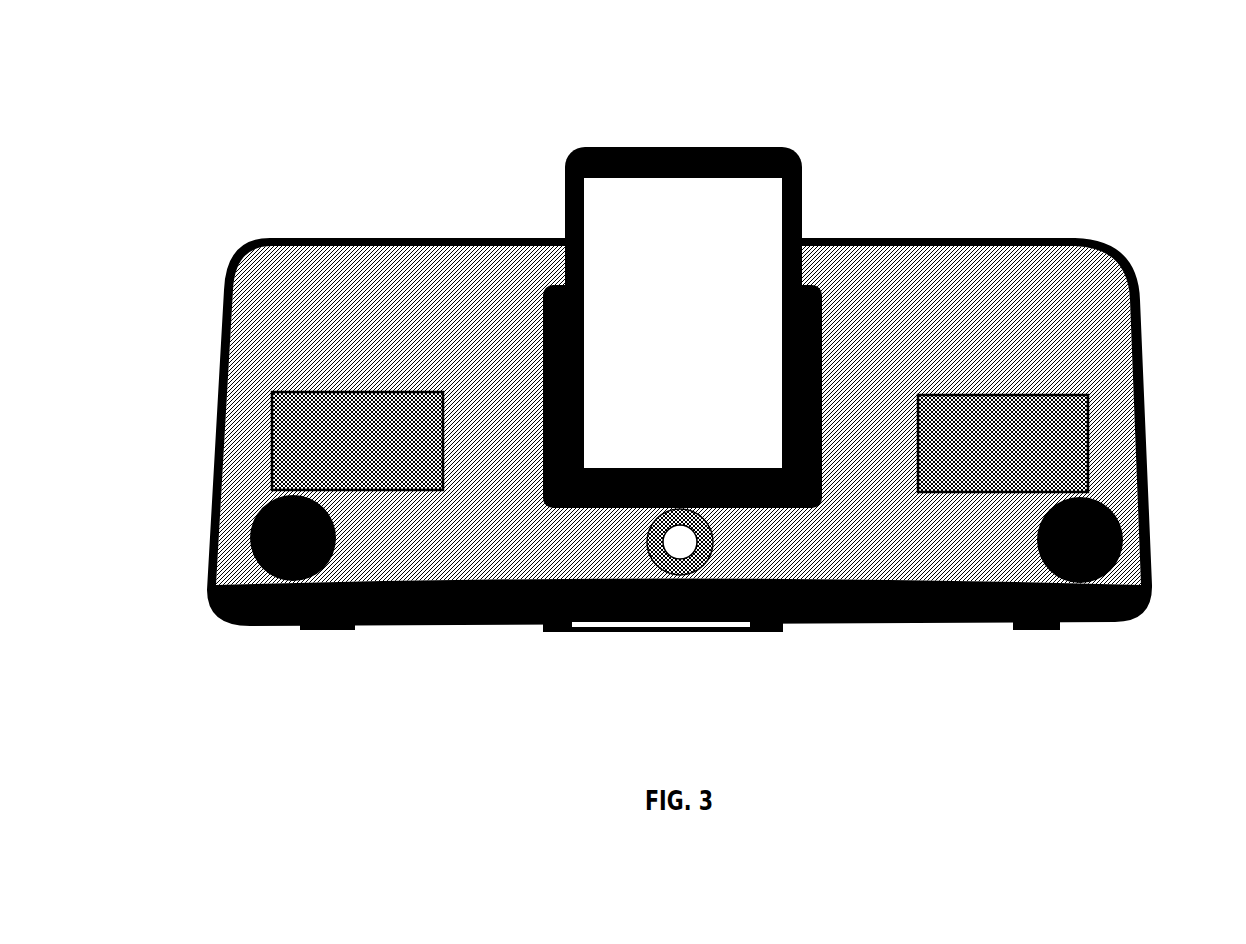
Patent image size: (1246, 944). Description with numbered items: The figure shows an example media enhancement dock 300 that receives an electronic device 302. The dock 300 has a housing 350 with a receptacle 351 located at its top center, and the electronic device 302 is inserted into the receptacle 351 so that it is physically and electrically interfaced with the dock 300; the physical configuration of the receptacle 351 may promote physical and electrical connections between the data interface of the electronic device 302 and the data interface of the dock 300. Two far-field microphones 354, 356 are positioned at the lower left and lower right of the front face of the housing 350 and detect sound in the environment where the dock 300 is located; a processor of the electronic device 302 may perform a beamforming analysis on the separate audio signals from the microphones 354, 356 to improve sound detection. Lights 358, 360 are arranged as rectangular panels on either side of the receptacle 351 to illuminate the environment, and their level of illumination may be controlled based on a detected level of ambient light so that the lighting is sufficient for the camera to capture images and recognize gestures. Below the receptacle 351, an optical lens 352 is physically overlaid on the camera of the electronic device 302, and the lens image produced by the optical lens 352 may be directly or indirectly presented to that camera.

The media enhancement dock 300 is at (223, 70).
The electronic device 302 is at (608, 147).
The housing 350 is at (997, 232).
The receptacle 351 is at (810, 293).
The optical lens 352 is at (655, 620).
The far-field microphone 354 is at (275, 630).
The far-field microphone 356 is at (1050, 628).
The light 358 is at (307, 390).
The light 360 is at (1065, 395).